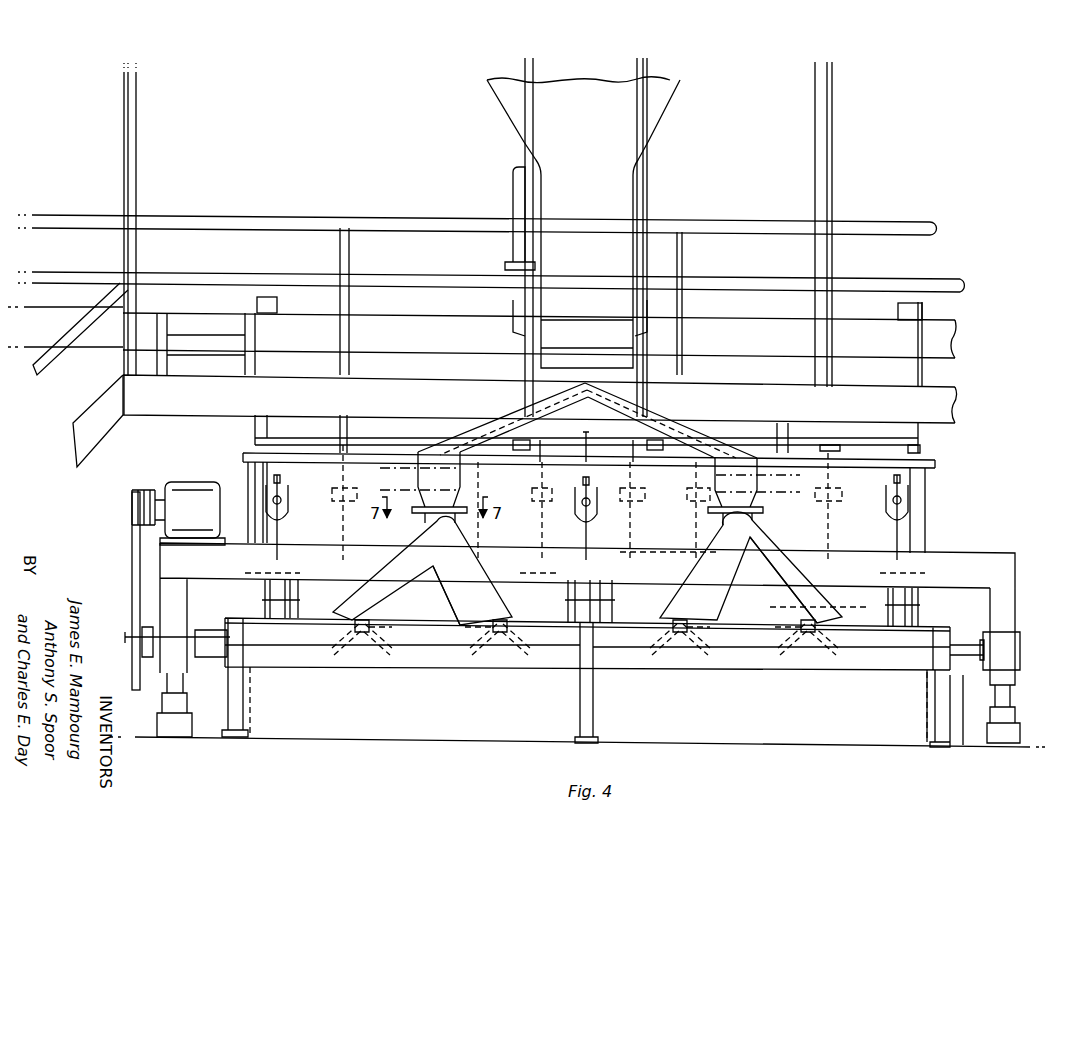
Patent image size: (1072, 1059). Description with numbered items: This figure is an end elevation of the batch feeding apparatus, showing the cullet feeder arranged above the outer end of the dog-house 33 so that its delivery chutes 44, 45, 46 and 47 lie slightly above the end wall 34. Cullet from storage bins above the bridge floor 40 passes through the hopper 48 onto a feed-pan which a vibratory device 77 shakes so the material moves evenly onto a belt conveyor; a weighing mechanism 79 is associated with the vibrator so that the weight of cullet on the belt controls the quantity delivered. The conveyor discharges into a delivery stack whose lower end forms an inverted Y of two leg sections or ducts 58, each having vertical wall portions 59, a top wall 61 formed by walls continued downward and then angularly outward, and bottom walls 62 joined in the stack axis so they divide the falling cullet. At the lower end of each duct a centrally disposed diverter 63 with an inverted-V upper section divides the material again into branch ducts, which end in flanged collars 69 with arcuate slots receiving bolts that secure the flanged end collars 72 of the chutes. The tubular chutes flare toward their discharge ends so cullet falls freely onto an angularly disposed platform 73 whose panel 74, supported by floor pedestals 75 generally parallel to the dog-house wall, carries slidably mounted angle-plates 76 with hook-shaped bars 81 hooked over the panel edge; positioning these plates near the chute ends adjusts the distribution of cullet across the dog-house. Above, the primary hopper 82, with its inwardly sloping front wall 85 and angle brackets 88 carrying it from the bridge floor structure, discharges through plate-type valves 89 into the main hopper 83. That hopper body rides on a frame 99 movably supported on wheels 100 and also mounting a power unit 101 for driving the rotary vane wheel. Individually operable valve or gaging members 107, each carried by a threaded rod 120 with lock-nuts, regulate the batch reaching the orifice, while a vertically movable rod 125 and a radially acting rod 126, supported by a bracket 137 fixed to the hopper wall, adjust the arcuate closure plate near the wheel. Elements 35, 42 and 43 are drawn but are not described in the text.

The dog-house 33 is at (415, 704).
The end wall 34 is at (708, 716).
The support legs 35 is at (254, 707).
The bridge floor 40 is at (170, 395).
The main beam 42 is at (215, 395).
The base 43 is at (470, 740).
The delivery chute 44 is at (402, 588).
The delivery chute 45 is at (463, 598).
The delivery chute 46 is at (705, 598).
The delivery chute 47 is at (780, 596).
The hopper 48 is at (595, 213).
The leg section or duct 58 is at (481, 430).
The wall portion 59 is at (502, 424).
The top wall 61 is at (440, 430).
The bottom wall 62 is at (516, 452).
The diverter 63 is at (415, 468).
The flanged collar 69 is at (466, 506).
The flanged end collar 72 is at (421, 517).
The platform 73 is at (548, 647).
The panel or plate 74 is at (622, 660).
The floor pedestal 75 is at (234, 655).
The angle-plate 76 is at (378, 652).
The vibratory device 77 is at (613, 338).
The weighing mechanism 79 is at (520, 190).
The hook-shaped bar 81 is at (363, 619).
The primary hopper 82 is at (378, 300).
The main hopper 83 is at (296, 472).
The front wall 85 is at (430, 300).
The angle bracket 88 is at (267, 305).
The plate-type valve 89 is at (356, 436).
The frame 99 is at (232, 558).
The wheel 100 is at (176, 722).
The power unit 101 is at (185, 495).
The valve or gaging member 107 is at (294, 565).
The rod 120 is at (836, 451).
The rod 125 is at (580, 498).
The rod 126 is at (585, 531).
The bracket 137 is at (591, 511).